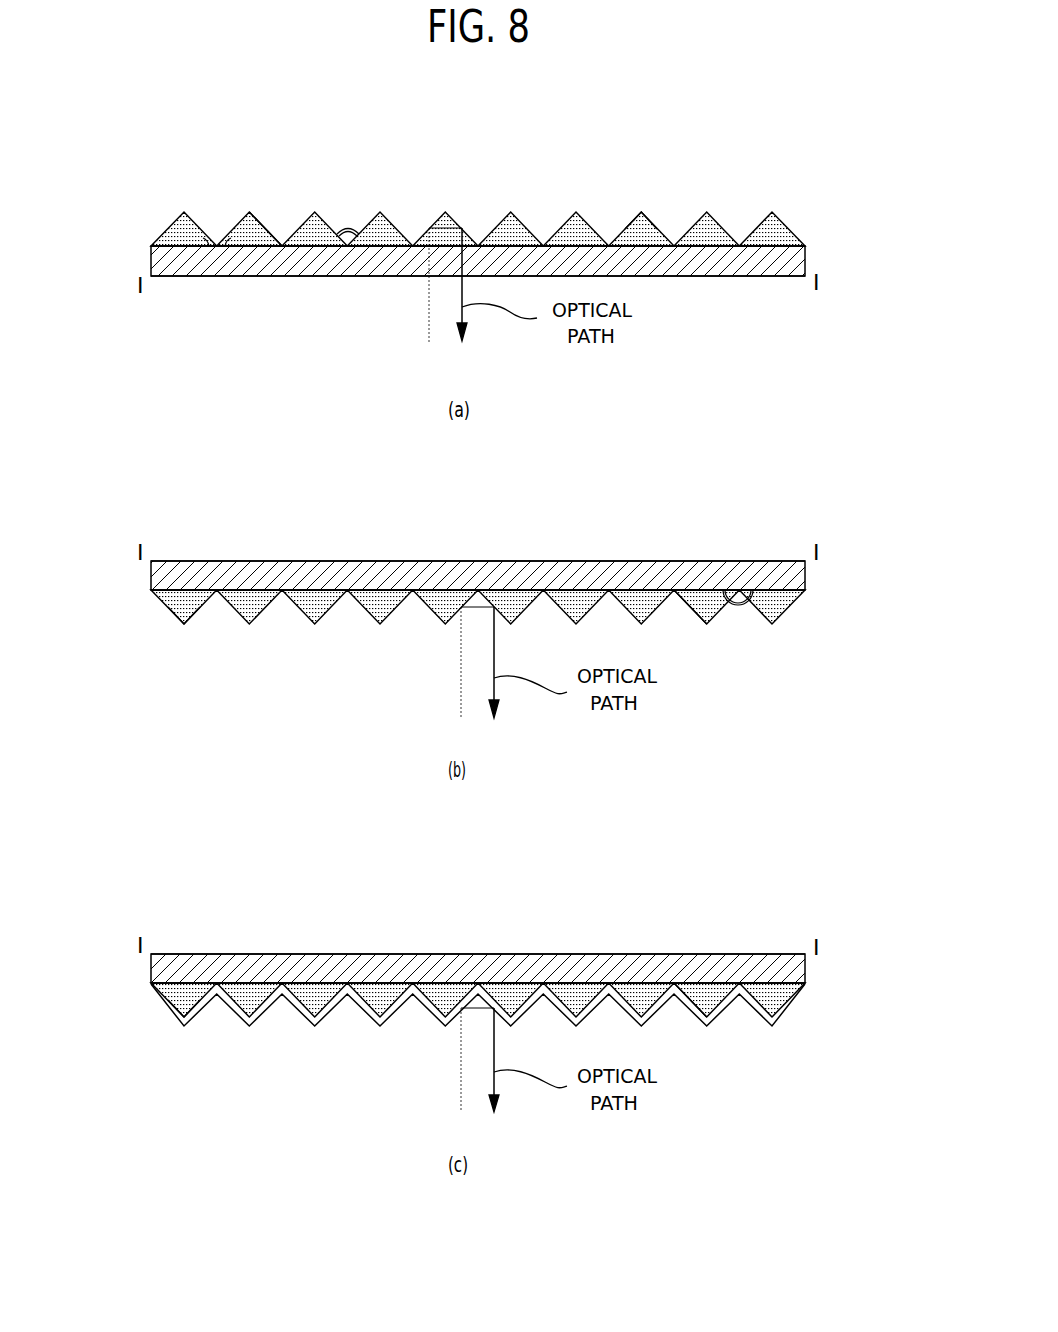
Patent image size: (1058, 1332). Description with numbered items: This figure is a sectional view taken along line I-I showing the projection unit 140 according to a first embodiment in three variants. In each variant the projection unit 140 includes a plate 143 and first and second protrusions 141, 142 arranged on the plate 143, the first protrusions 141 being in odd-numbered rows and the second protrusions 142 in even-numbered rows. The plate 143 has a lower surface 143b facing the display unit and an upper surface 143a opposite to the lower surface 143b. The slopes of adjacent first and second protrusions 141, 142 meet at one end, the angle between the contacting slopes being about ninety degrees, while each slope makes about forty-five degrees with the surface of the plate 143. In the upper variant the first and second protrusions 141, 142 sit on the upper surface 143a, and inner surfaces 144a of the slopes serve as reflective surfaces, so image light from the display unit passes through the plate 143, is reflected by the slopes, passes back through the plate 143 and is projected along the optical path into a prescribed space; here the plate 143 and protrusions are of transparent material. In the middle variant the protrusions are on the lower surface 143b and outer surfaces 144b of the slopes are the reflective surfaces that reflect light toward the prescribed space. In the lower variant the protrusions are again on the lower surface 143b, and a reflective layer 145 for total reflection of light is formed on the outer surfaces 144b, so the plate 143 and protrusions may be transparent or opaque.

The projection unit 140 is at (779, 117).
The first protrusion 141 is at (172, 232).
The second protrusion 142 is at (262, 228).
The plate 143 is at (158, 261).
The upper surface 143a is at (773, 250).
The lower surface 143b is at (762, 277).
The inner surface 144a is at (628, 229).
The outer surface 144b is at (170, 610).
The reflective layer 145 is at (183, 1005).